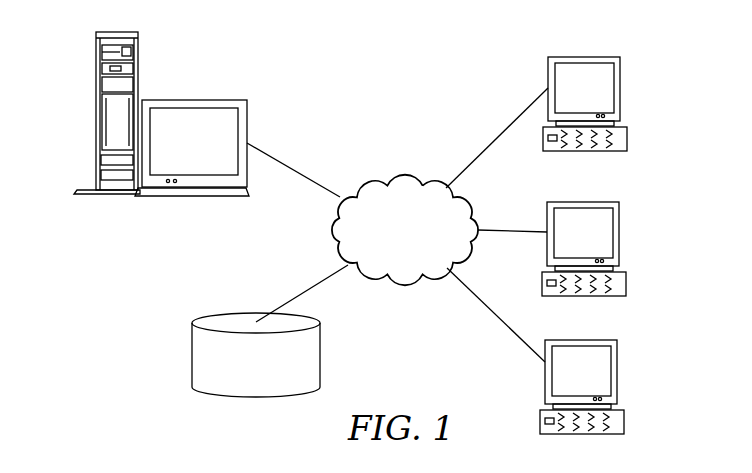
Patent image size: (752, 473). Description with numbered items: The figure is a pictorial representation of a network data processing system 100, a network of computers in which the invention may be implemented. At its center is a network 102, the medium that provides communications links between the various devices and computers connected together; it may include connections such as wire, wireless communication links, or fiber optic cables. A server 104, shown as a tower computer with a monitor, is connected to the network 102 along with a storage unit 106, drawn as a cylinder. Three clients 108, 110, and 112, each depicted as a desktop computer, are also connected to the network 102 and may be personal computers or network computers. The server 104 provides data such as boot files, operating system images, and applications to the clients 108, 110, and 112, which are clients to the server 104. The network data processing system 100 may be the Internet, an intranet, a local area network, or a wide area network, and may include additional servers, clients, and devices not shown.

The network data processing system 100 is at (433, 70).
The network 102 is at (380, 181).
The server 104 is at (96, 115).
The storage unit 106 is at (192, 355).
The client 108 is at (620, 91).
The client 110 is at (620, 233).
The client 112 is at (619, 370).